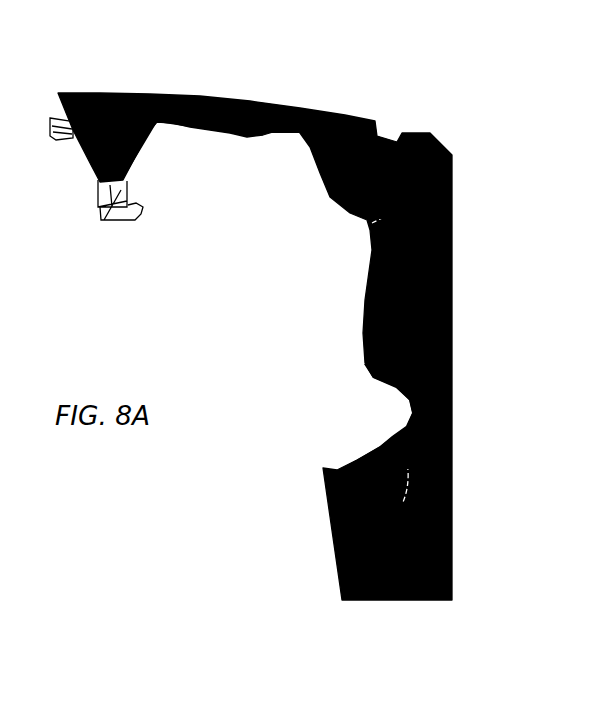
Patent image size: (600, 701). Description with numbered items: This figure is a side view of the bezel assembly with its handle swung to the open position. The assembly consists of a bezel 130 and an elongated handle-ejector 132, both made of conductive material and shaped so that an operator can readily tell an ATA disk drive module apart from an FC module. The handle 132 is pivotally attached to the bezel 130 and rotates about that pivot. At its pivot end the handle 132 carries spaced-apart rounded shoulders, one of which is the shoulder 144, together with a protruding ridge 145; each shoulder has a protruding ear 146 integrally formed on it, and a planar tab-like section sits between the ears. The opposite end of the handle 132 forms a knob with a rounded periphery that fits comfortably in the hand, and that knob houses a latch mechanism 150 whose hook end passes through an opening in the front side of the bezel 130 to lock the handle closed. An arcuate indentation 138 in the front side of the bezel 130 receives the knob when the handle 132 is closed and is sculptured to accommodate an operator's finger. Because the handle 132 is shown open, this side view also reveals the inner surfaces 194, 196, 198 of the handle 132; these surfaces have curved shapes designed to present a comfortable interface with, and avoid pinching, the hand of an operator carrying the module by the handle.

The bezel 130 is at (452, 285).
The handle-ejector 132 is at (240, 100).
The arcuate indentation 138 is at (387, 404).
The rounded shoulder 144 is at (333, 167).
The protruding ridge 145 is at (377, 118).
The protruding ear 146 is at (410, 137).
The latch mechanism 150 is at (110, 213).
The inner surface 194 is at (197, 127).
The inner surface 196 is at (283, 132).
The inner surface 198 is at (350, 217).